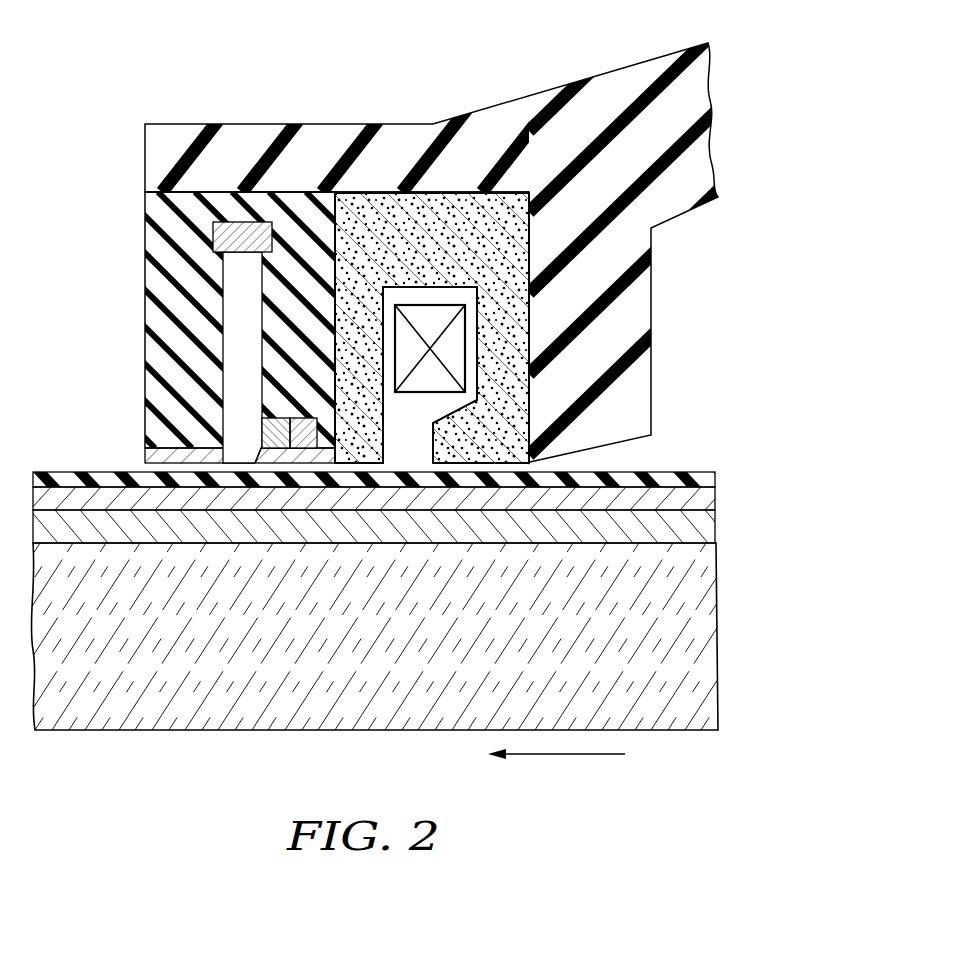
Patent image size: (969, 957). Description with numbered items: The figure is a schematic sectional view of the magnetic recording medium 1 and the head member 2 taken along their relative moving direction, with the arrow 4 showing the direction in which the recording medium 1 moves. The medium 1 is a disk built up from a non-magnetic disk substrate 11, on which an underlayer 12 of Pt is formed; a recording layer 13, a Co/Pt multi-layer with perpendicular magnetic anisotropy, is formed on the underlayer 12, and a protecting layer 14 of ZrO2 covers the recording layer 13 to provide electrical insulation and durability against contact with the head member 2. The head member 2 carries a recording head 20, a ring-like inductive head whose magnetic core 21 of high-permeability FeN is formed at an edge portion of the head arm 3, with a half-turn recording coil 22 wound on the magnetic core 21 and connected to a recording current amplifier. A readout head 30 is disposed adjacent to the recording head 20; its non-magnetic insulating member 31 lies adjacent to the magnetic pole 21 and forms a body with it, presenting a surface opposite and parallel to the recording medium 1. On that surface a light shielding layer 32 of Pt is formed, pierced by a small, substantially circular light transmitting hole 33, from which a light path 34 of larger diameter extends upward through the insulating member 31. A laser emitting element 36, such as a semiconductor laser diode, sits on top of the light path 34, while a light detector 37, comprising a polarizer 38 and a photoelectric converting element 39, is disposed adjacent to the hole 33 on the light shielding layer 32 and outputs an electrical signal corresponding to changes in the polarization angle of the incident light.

The magnetic recording medium 1 is at (428, 610).
The head member 2 is at (396, 336).
The head arm 3 is at (624, 80).
The arrow 4 is at (567, 755).
The non-magnetic disk substrate 11 is at (698, 662).
The underlayer 12 is at (715, 534).
The recording layer 13 is at (715, 500).
The protecting layer 14 is at (700, 472).
The recording head 20 is at (458, 200).
The magnetic core 21 is at (518, 232).
The recording coil 22 is at (420, 393).
The readout head 30 is at (228, 192).
The non-magnetic insulating member 31 is at (173, 202).
The light shielding layer 32 is at (155, 455).
The light transmitting hole 33 is at (243, 458).
The light path 34 is at (237, 306).
The laser emitting element 36 is at (266, 222).
The light detector 37 is at (288, 449).
The polarizer 38 is at (278, 432).
The photoelectric converting element 39 is at (327, 445).